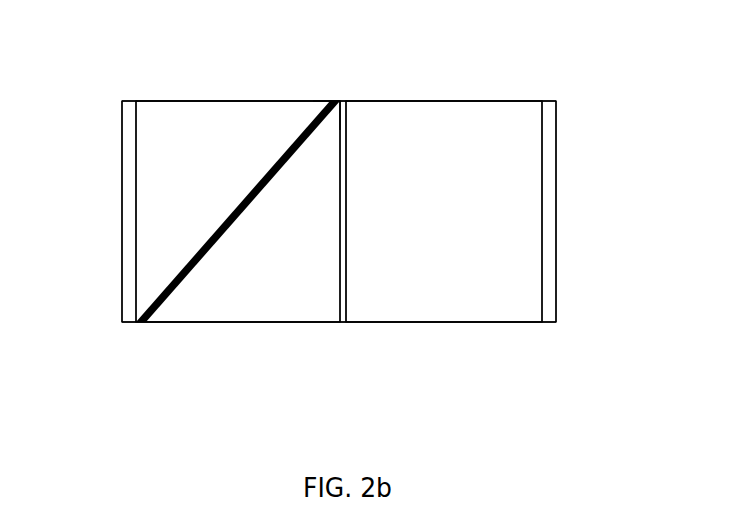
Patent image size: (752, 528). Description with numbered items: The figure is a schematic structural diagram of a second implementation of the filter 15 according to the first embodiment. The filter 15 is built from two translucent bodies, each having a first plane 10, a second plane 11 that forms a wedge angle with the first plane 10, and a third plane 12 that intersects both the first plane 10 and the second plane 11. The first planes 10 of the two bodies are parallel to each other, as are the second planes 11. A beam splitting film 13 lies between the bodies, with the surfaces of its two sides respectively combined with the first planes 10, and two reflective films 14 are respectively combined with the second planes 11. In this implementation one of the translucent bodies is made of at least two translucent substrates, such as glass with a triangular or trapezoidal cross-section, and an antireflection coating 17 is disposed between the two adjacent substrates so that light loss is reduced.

The first plane 10 is at (243, 198).
The second plane 11 is at (136, 194).
The third plane 12 is at (220, 100).
The beam splitting film 13 is at (313, 101).
The reflective film 14 is at (122, 247).
The filter 15 is at (391, 82).
The antireflection coating 17 is at (343, 322).